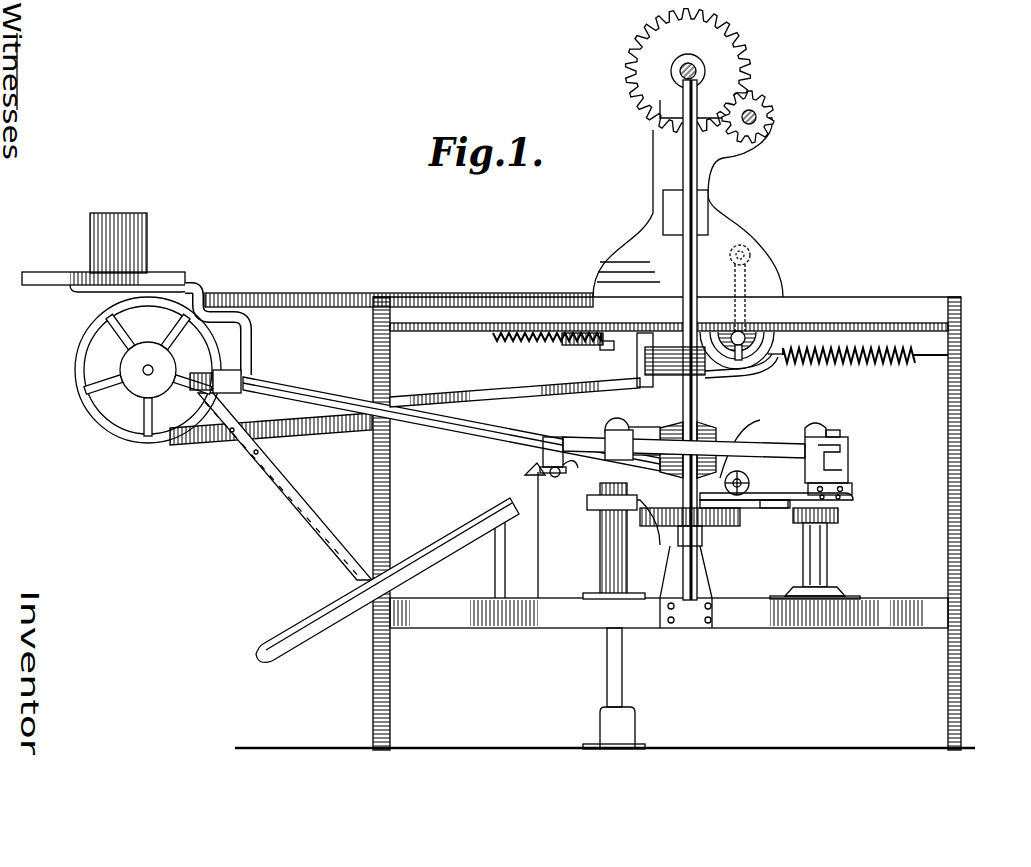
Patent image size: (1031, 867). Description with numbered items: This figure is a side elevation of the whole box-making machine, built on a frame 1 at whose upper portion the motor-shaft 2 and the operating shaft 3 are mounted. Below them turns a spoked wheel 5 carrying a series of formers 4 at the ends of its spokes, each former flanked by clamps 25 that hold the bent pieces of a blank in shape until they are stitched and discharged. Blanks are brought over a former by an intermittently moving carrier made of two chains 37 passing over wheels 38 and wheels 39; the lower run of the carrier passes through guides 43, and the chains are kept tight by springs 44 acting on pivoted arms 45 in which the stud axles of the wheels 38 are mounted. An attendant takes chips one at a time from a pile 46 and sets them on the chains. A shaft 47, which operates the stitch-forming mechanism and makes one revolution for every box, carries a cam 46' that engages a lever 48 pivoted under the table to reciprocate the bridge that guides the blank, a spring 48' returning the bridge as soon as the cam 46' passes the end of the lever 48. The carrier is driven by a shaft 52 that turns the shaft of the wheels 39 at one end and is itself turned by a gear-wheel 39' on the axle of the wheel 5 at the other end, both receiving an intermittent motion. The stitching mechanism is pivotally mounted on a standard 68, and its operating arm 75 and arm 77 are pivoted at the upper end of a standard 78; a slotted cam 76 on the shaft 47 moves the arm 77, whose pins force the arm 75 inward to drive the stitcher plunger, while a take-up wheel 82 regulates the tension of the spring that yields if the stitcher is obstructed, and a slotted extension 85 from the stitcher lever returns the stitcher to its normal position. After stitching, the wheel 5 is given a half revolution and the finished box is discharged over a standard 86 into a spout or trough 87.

The frame 1 is at (880, 312).
The motor-shaft 2 is at (755, 123).
The operating shaft 3 is at (672, 78).
The former 4 is at (543, 447).
The wheel 5 is at (590, 450).
The clamps 25 is at (551, 437).
The chains 37 is at (740, 376).
The wheels 38 is at (776, 343).
The wheels 39 is at (158, 380).
The gear-wheel 39' is at (690, 444).
The guides 43 is at (547, 377).
The springs 44 is at (865, 366).
The pivoted arms 45 is at (766, 335).
The pile 46 is at (134, 294).
The cam 46' is at (652, 345).
The shaft 47 is at (700, 575).
The lever 48 is at (588, 348).
The spring 48' is at (547, 345).
The shaft 52 is at (478, 420).
The standard 68 is at (827, 553).
The arm 75 is at (800, 500).
The cam 76 is at (737, 516).
The arm 77 is at (645, 510).
The standard 78 is at (614, 533).
The take-up wheel 82 is at (749, 481).
The extension 85 is at (772, 504).
The standard 86 is at (533, 530).
The spout or trough 87 is at (387, 580).